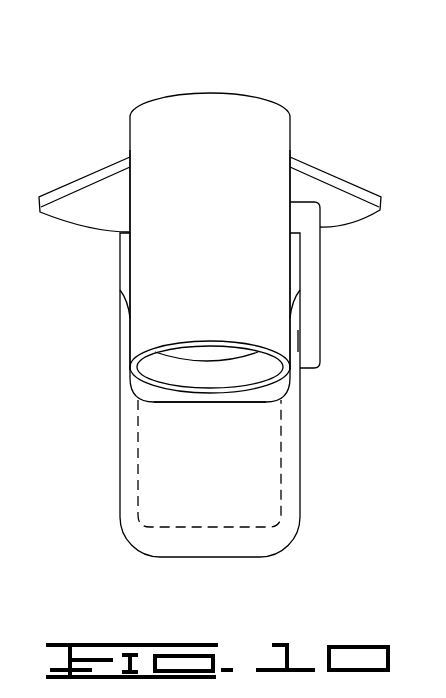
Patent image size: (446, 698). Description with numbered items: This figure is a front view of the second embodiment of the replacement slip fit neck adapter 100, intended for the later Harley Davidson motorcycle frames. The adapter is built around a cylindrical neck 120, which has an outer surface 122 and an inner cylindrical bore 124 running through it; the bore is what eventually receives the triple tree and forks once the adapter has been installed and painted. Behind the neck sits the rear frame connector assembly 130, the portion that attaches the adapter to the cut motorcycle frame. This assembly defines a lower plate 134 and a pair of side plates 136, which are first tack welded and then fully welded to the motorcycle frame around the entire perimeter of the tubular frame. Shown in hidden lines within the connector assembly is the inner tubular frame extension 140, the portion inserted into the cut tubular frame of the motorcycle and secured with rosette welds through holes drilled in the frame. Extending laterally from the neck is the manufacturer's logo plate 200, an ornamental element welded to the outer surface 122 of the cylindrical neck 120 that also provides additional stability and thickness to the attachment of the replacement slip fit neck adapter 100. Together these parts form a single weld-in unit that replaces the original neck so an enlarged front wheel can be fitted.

The replacement slip fit neck adapter 100 is at (337, 89).
The cylindrical neck 120 is at (227, 107).
The outer surface 122 is at (160, 237).
The inner cylindrical bore 124 is at (197, 352).
The rear frame connector assembly 130 is at (300, 412).
The lower plate 134 is at (170, 403).
The side plates 136 is at (300, 262).
The inner tubular frame extension 140 is at (282, 477).
The manufacturer's logo plate 200 is at (330, 177).